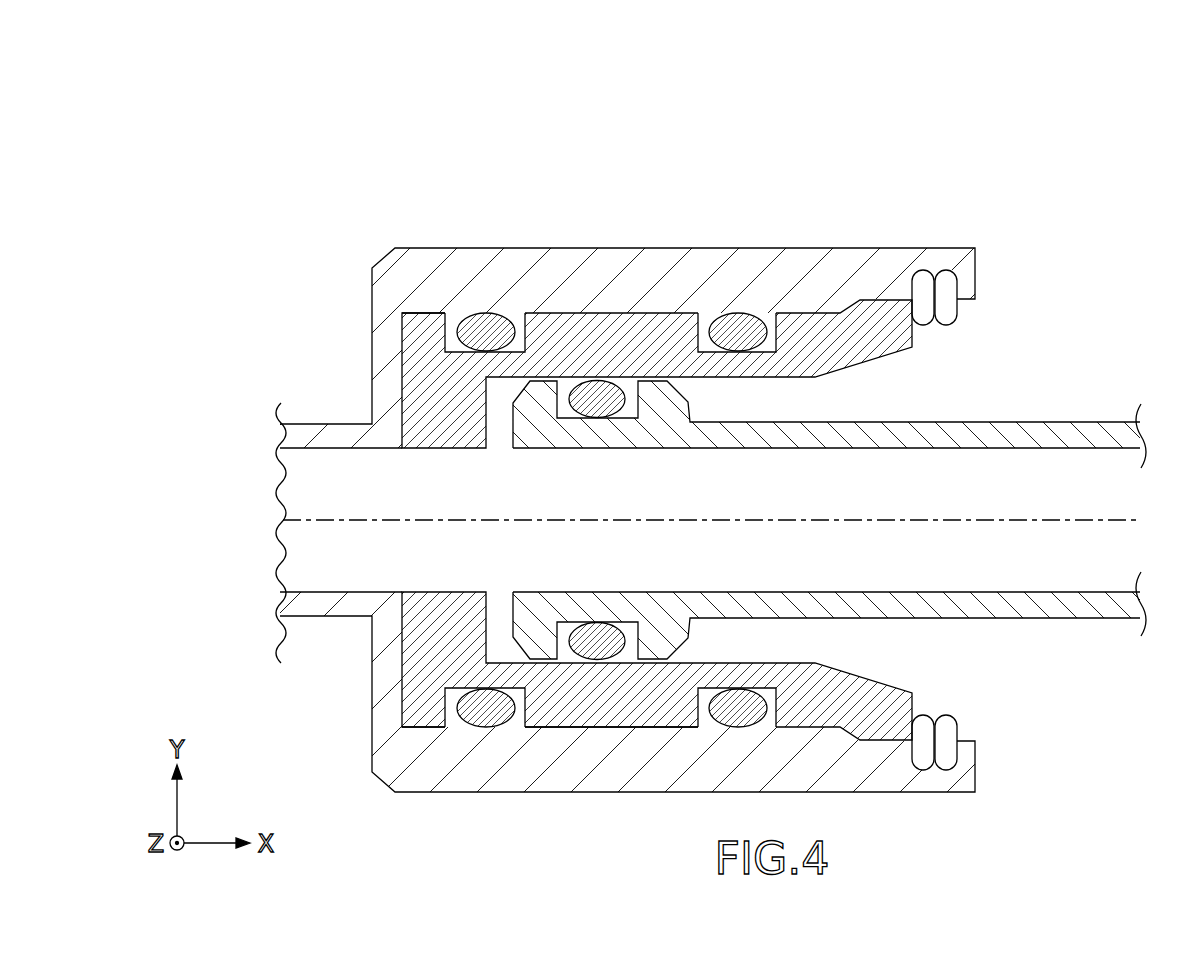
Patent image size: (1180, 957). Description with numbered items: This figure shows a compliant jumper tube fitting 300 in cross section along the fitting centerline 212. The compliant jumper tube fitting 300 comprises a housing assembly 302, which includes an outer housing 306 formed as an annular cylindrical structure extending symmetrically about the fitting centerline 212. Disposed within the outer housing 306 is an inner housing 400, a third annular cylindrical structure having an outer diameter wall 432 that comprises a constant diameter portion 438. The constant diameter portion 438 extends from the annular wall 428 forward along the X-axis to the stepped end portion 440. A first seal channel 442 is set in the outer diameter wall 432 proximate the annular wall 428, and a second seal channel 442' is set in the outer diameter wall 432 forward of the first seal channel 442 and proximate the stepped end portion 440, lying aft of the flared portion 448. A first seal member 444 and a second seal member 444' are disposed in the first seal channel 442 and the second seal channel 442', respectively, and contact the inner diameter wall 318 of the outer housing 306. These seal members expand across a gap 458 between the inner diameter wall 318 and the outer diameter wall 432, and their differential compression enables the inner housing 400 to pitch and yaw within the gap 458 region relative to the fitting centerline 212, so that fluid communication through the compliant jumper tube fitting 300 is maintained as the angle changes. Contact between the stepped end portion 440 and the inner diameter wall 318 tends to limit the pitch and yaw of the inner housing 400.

The compliant jumper tube fitting 300 is at (884, 126).
The housing assembly 302 is at (662, 160).
The outer housing 306 is at (826, 247).
The inner diameter wall 318 is at (670, 312).
The inner housing 400 is at (381, 348).
The annular wall 428 is at (425, 400).
The outer diameter wall 432 is at (432, 312).
The constant diameter portion 438 is at (567, 312).
The stepped end portion 440 is at (900, 308).
The first seal channel 442 is at (492, 466).
The second seal channel 442' is at (748, 465).
The first seal member 444 is at (486, 464).
The second seal member 444' is at (734, 465).
The flared portion 448 is at (862, 362).
The gap 458 is at (627, 727).
The fitting centerline 212 is at (313, 522).